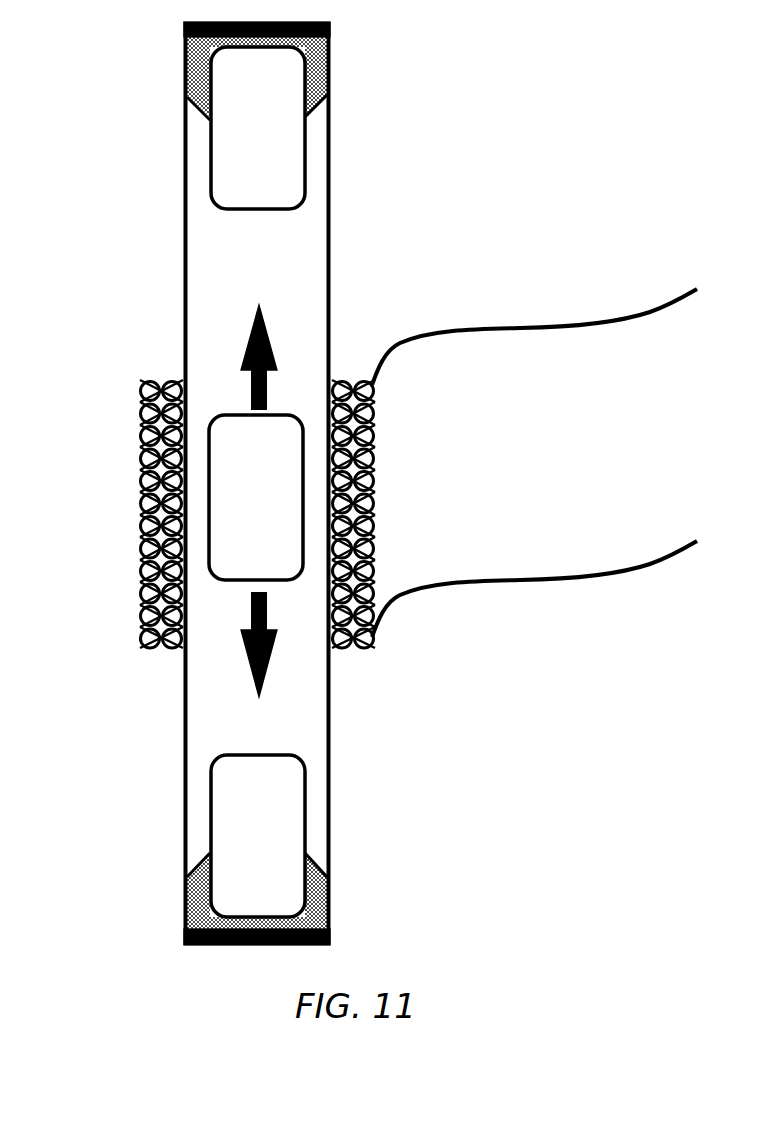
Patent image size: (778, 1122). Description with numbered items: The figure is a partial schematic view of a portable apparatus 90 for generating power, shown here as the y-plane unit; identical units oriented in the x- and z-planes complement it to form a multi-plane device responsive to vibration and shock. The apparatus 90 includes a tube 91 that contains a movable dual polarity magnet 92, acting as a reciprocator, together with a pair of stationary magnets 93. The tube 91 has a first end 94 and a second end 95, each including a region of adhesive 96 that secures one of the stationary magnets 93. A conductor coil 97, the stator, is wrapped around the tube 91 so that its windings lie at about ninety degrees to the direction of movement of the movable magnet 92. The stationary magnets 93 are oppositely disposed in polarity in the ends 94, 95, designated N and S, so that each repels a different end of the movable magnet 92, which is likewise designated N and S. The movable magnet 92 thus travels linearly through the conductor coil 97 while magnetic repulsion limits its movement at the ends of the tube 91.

The apparatus 90 is at (90, 153).
The tube 91 is at (184, 707).
The movable dual polarity magnet 92 is at (273, 498).
The stationary magnets 93 is at (290, 123).
The first end 94 is at (161, 935).
The second end 95 is at (161, 39).
The region of adhesive 96 is at (315, 68).
The conductor coil 97 is at (140, 618).